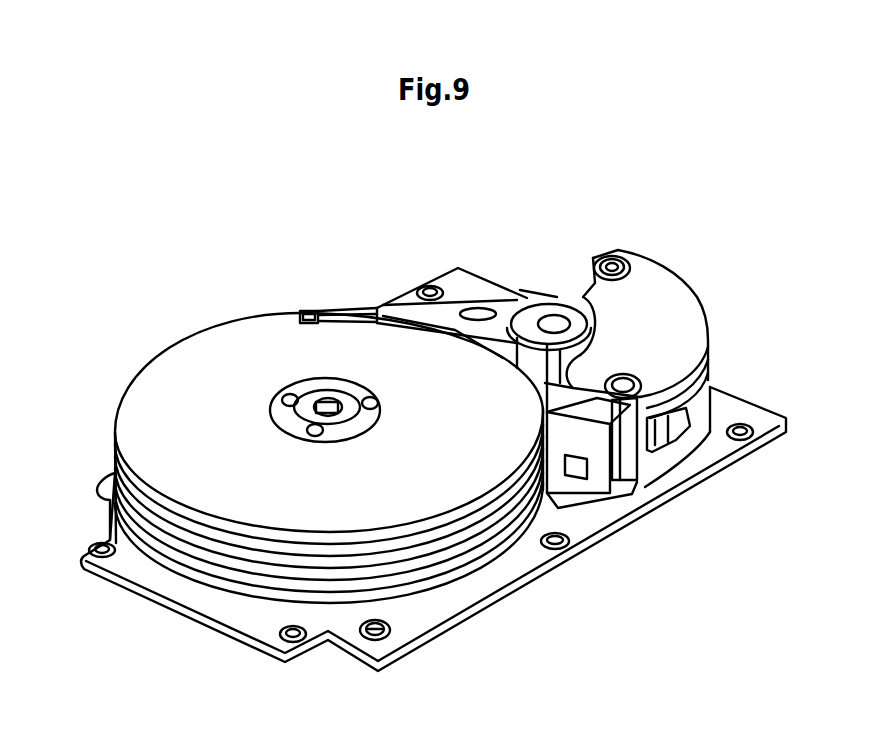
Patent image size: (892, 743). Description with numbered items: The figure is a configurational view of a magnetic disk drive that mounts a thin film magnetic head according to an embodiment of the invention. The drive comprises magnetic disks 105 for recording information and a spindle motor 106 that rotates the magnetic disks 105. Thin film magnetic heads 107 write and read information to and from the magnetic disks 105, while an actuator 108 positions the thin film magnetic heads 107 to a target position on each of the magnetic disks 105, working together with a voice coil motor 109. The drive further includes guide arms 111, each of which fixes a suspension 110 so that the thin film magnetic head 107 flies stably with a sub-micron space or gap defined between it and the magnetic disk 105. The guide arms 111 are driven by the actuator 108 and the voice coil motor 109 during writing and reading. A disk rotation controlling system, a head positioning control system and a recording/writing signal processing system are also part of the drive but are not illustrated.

The magnetic disks 105 is at (197, 432).
The spindle motor 106 is at (292, 396).
The thin film magnetic heads 107 is at (305, 313).
The actuator 108 is at (559, 315).
The voice coil motor 109 is at (713, 398).
The suspension 110 is at (357, 312).
The guide arms 111 is at (430, 286).